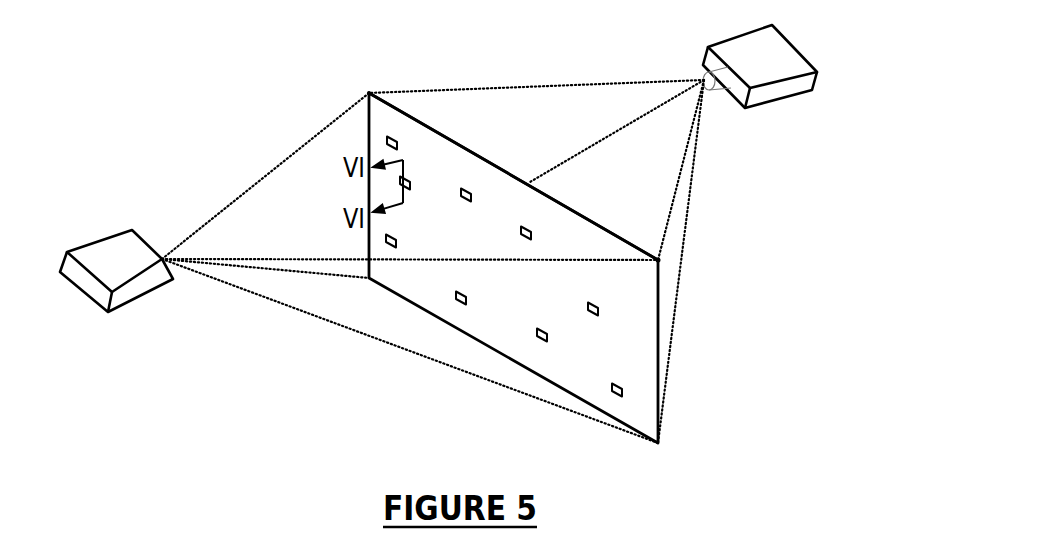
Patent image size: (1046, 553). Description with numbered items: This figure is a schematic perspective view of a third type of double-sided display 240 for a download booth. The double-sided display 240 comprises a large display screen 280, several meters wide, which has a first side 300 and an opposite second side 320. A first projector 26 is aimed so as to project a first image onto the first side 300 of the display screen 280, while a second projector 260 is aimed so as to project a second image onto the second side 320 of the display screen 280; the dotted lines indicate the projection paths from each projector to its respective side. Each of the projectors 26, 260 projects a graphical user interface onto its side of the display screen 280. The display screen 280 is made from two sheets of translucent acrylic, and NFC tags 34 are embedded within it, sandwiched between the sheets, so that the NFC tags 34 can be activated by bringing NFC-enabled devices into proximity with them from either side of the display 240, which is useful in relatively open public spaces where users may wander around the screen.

The first projector 26 is at (108, 267).
The second projector 260 is at (792, 78).
The double-sided display 240 is at (236, 119).
The first side 300 is at (399, 368).
The display screen 280 is at (469, 163).
The second side 320 is at (575, 195).
The NFC tags 34 is at (547, 333).